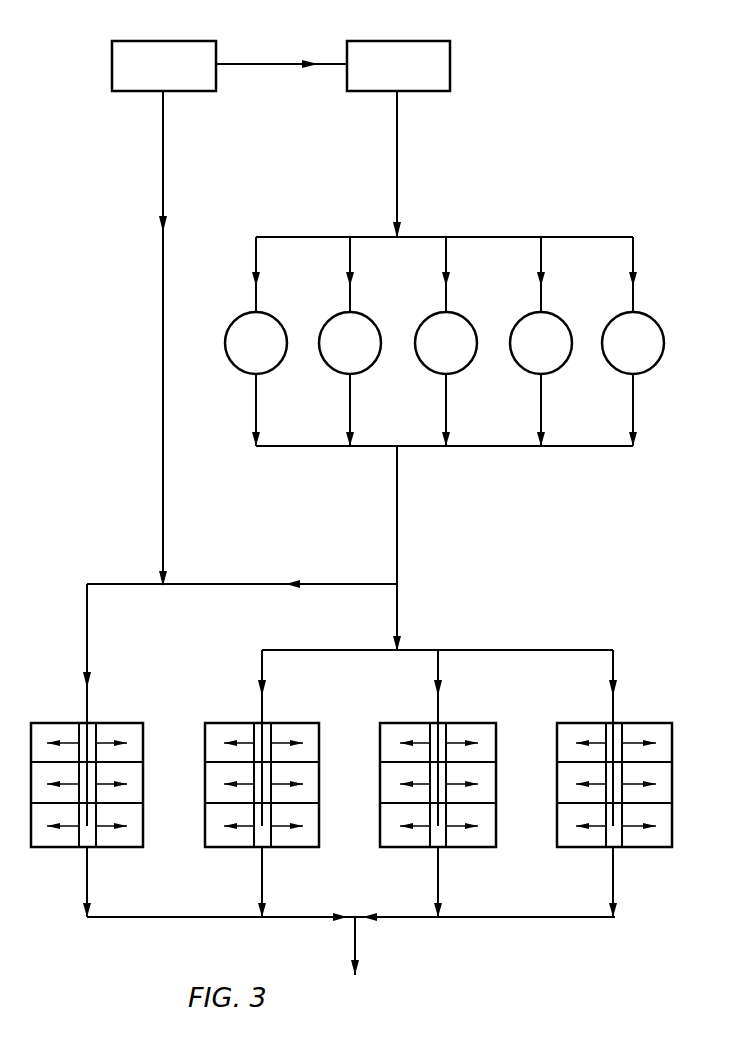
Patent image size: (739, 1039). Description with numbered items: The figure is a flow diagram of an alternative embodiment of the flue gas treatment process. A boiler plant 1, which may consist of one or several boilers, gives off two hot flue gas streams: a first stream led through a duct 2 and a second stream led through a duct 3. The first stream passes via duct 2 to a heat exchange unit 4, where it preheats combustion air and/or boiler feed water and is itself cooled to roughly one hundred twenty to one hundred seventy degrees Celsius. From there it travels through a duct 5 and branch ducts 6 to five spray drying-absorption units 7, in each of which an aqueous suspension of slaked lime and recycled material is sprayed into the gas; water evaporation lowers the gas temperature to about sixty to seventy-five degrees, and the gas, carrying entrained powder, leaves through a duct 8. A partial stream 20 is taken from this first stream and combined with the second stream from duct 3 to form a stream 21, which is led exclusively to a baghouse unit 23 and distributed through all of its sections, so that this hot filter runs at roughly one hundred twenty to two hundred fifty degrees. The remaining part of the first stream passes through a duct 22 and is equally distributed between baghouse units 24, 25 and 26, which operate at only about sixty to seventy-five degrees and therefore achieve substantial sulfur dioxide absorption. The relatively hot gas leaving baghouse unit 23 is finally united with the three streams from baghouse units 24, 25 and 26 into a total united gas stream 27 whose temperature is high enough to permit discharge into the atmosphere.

The boiler plant 1 is at (178, 41).
The duct 2 is at (268, 60).
The duct 3 is at (164, 158).
The heat exchange unit 4 is at (400, 41).
The duct 5 is at (398, 146).
The ducts 6 is at (258, 262).
The spray drying-absorption units 7 is at (272, 364).
The duct 8 is at (398, 477).
The partial stream 20 is at (240, 584).
The stream 21 is at (86, 633).
The duct 22 is at (398, 612).
The baghouse unit 23 is at (31, 781).
The baghouse unit 24 is at (319, 780).
The baghouse unit 25 is at (496, 781).
The baghouse unit 26 is at (672, 784).
The united gas stream 27 is at (357, 937).